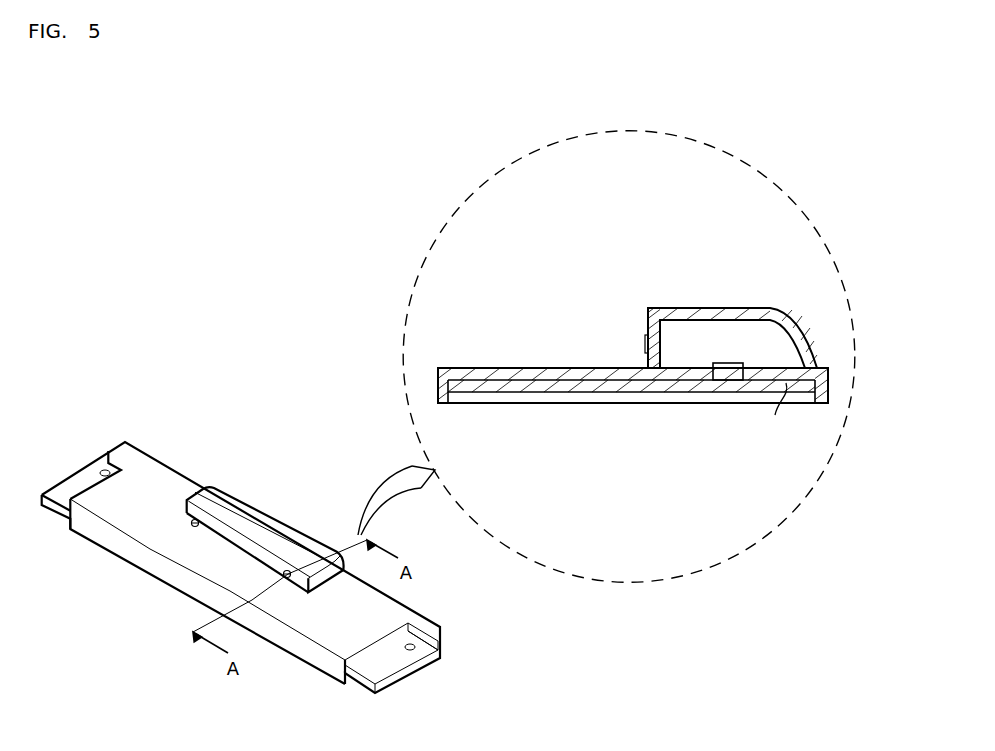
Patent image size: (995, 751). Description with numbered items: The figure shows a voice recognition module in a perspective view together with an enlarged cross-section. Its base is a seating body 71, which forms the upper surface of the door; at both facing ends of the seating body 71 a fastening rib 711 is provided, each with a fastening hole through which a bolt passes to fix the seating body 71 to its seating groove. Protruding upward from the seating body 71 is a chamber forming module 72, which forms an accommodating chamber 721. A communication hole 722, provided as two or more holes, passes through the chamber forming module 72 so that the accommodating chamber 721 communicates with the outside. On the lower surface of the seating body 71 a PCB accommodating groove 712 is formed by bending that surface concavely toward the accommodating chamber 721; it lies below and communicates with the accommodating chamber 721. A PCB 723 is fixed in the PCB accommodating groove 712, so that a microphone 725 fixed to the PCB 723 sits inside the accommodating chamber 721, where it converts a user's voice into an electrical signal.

The seating body 71 is at (164, 480).
The chamber forming module 72 is at (273, 530).
The fastening rib 711 is at (80, 482).
The PCB accommodating groove 712 is at (515, 397).
The accommodating chamber 721 is at (780, 352).
The communication hole 722 is at (192, 524).
The PCB 723 is at (628, 395).
The microphone 725 is at (727, 378).